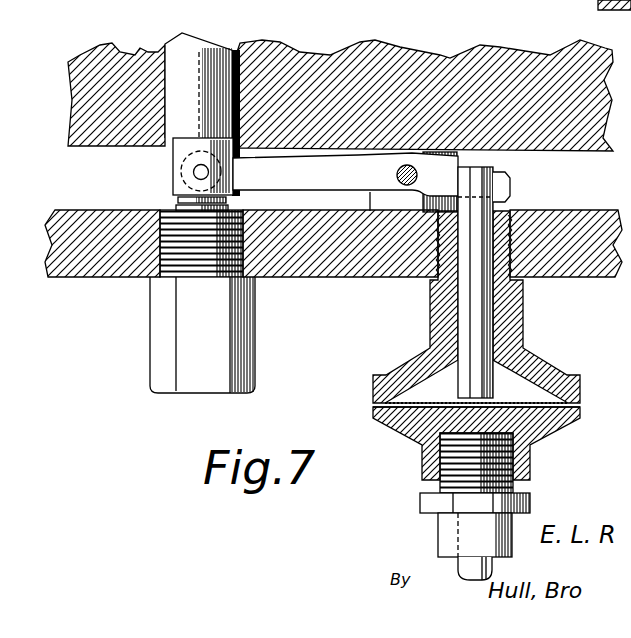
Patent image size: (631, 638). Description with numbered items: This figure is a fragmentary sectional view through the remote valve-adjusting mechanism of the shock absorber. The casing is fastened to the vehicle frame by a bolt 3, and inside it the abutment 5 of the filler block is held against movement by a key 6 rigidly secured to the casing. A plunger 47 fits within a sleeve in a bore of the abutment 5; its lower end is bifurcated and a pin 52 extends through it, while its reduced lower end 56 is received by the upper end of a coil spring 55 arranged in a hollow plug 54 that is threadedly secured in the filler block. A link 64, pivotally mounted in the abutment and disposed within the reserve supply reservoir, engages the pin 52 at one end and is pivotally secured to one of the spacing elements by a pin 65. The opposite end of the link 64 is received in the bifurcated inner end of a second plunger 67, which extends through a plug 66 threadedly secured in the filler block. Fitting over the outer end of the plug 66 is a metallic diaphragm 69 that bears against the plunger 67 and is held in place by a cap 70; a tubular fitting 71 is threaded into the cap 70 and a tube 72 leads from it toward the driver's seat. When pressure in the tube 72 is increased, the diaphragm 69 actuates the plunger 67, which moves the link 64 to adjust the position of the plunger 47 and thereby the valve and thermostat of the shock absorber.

The bolt 3 is at (551, 0).
The abutment 5 is at (125, 60).
The key 6 is at (425, 75).
The plunger 47 is at (201, 52).
The pin 52 is at (182, 172).
The hollow plug 54 is at (252, 318).
The coil spring 55 is at (233, 208).
The reduced lower end 56 is at (176, 186).
The link 64 is at (345, 174).
The pin 65 is at (398, 180).
The plug 66 is at (432, 326).
The plunger 67 is at (495, 300).
The metallic diaphragm 69 is at (480, 406).
The cap 70 is at (557, 427).
The tubular fitting 71 is at (421, 502).
The tube 72 is at (460, 566).